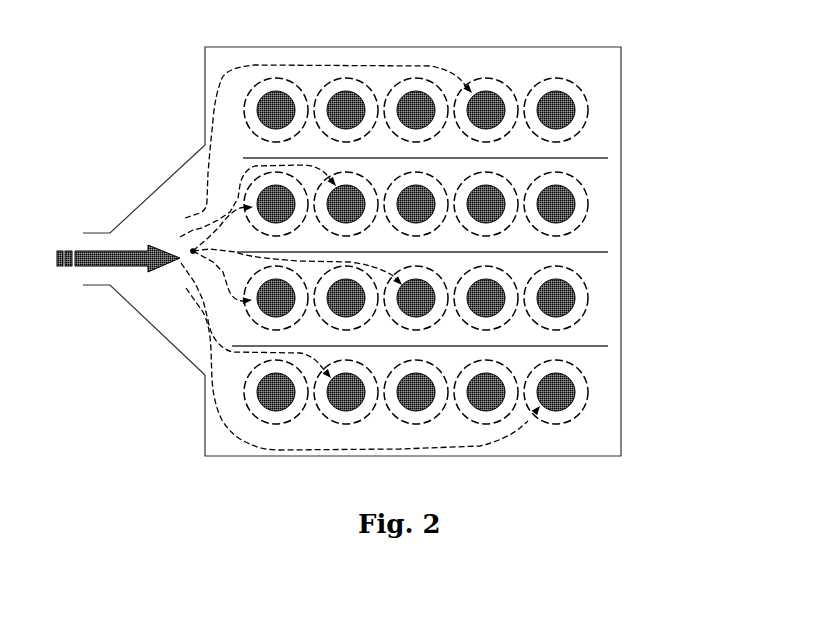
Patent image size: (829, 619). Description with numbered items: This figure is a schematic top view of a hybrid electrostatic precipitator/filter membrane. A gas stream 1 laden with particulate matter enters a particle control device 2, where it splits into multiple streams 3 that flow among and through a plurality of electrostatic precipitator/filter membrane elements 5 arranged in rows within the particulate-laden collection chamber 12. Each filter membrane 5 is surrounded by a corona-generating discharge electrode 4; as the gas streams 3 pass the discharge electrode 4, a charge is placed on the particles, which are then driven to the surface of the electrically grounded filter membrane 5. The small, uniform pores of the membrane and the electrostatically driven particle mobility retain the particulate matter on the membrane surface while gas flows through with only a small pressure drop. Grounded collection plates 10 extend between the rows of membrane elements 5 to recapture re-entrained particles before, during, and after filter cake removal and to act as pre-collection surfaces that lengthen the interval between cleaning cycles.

The gas stream 1 is at (118, 248).
The particle control device 2 is at (205, 437).
The multiple streams 3 is at (218, 267).
The corona-generating discharge electrode 4 is at (585, 317).
The electrostatic precipitator/filter membrane element 5 is at (572, 193).
The grounded collection plate 10 is at (583, 155).
The particulate-laden collection chamber 12 is at (610, 428).